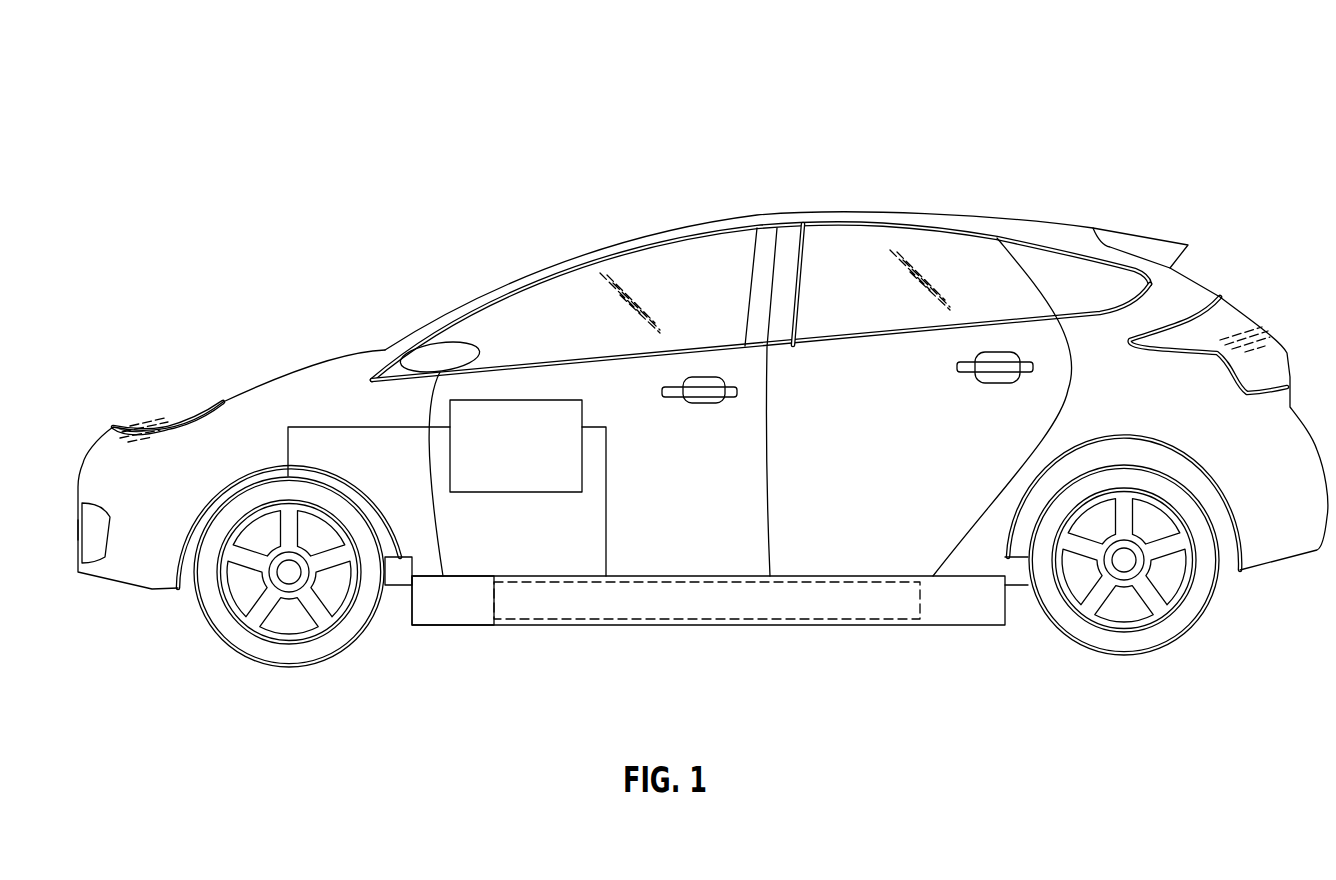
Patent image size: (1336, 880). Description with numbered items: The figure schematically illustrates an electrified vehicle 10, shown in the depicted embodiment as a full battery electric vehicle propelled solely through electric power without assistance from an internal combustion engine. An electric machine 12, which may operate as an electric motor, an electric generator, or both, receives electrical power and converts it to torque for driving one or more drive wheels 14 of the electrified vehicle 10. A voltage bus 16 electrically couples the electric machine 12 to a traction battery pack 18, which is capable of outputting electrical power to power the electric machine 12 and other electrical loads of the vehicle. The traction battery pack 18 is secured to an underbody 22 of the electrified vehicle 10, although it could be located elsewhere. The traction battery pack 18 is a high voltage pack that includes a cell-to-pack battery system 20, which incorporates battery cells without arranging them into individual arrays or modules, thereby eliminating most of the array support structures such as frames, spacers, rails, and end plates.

The electrified vehicle 10 is at (1037, 168).
The electric machine 12 is at (448, 420).
The drive wheels 14 is at (230, 647).
The voltage bus 16 is at (587, 518).
The traction battery pack 18 is at (848, 625).
The cell-to-pack battery system 20 is at (925, 608).
The underbody 22 is at (470, 577).